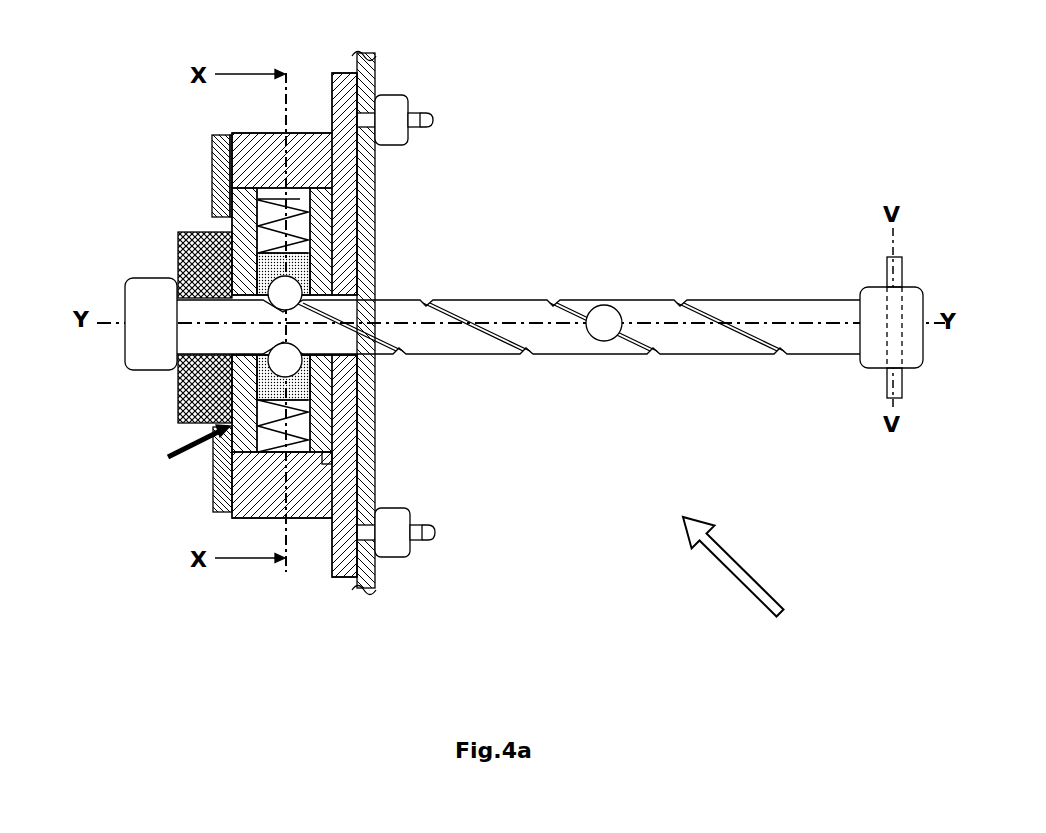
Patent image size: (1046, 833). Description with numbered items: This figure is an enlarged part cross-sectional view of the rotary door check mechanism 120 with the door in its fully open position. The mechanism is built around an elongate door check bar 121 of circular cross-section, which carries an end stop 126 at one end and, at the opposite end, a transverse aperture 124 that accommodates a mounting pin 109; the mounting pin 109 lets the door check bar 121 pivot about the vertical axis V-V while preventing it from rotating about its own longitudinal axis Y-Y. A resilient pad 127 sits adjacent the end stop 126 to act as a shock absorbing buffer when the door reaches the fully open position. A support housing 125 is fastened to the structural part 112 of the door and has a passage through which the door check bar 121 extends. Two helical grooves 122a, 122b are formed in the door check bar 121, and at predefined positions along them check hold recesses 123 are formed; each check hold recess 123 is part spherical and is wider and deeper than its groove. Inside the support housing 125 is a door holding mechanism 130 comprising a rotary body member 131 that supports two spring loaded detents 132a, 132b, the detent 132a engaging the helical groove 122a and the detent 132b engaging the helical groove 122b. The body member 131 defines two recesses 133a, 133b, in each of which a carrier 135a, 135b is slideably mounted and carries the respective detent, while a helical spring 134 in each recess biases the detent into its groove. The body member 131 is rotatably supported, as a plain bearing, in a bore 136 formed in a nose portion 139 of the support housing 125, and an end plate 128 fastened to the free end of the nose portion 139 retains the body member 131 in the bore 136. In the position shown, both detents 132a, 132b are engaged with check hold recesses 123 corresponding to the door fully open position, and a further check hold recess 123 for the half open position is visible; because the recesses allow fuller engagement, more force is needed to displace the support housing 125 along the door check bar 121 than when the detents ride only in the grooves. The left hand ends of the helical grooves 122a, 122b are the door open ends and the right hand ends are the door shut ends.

The mounting pin 109 is at (888, 378).
The structural part of the door 112 is at (377, 75).
The rotary door check mechanism 120 is at (758, 581).
The door check bar 121 is at (568, 355).
The first helical groove 122a is at (627, 343).
The second helical groove 122b is at (725, 333).
The check hold recess 123 is at (613, 304).
The transverse aperture 124 is at (888, 305).
The support housing 125 is at (335, 86).
The end stop 126 is at (130, 277).
The resilient pad 127 is at (178, 241).
The end plate 128 is at (212, 180).
The door holding mechanism 130 is at (174, 448).
The rotary body member 131 is at (270, 187).
The spring loaded detent 132a is at (285, 293).
The spring loaded detent 132b is at (285, 360).
The recess 133a is at (303, 215).
The recess 133b is at (300, 422).
The helical spring 134 is at (232, 227).
The carrier 135a is at (298, 263).
The carrier 135b is at (268, 387).
The bore 136 is at (323, 452).
The nose portion 139 is at (297, 518).